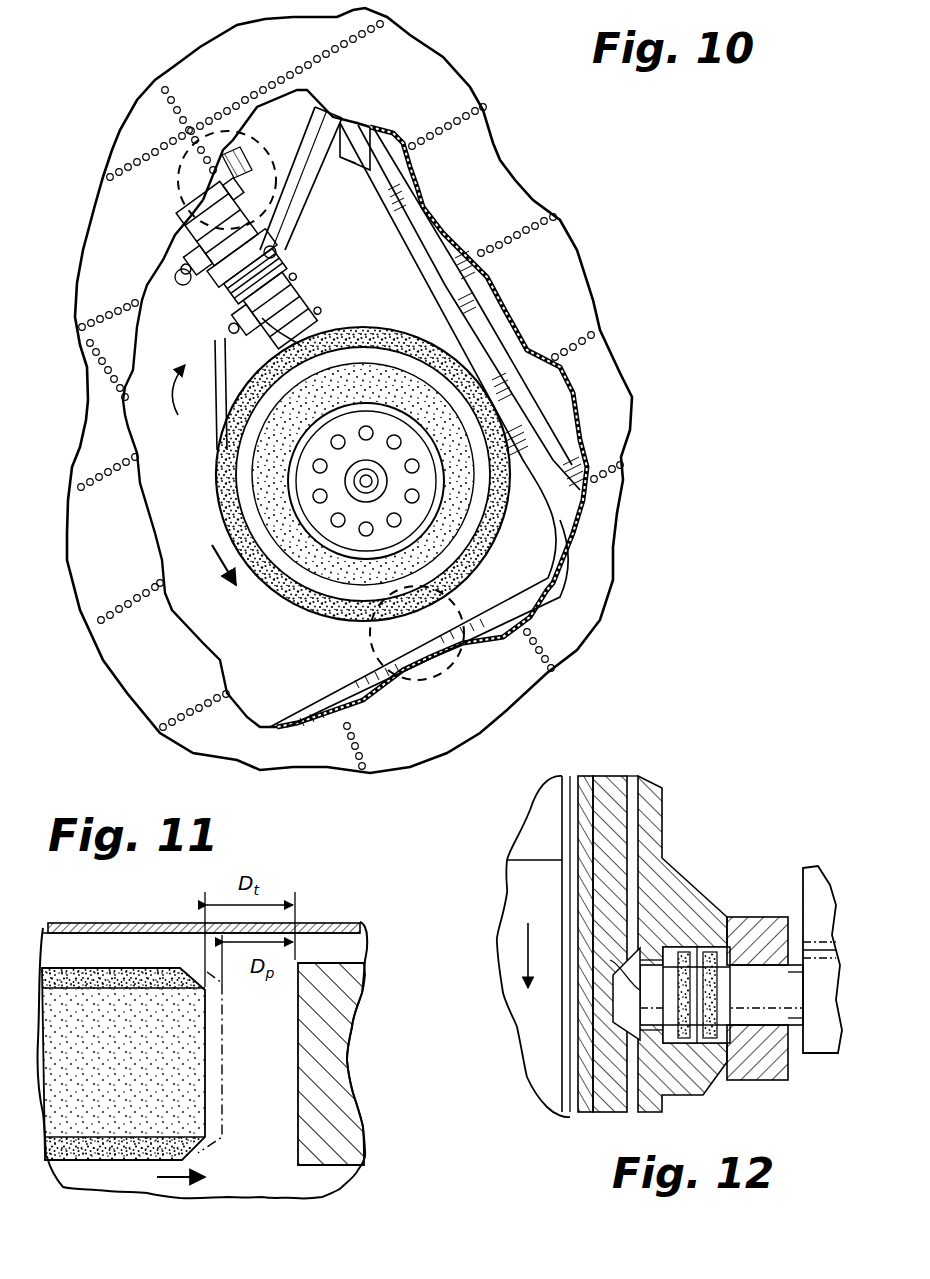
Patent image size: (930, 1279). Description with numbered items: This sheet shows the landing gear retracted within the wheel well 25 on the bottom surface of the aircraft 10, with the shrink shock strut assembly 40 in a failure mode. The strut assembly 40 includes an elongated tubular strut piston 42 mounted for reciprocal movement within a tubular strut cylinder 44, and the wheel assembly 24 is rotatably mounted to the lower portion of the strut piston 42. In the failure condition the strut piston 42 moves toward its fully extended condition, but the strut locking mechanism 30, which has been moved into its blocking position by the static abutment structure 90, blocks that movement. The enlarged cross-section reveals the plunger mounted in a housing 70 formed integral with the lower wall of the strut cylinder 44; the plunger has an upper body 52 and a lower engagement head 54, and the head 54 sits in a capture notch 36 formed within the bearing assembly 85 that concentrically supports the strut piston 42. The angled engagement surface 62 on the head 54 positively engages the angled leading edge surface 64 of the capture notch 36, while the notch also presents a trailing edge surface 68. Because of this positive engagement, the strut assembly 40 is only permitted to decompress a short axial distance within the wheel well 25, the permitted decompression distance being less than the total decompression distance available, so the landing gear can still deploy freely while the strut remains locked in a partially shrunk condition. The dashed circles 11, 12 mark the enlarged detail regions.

In FIG. 10, the aircraft 10 is at (562, 263).
In FIG. 10, the detail region of FIG. 11 is at (366, 636).
In FIG. 10, the detail region of FIG. 12 is at (174, 200).
In FIG. 10, the wheel assembly 24 is at (220, 508).
In FIG. 11, the wheel assembly 24 is at (132, 1010).
In FIG. 10, the wheel well 25 is at (388, 268).
In FIG. 11, the wheel well 25 is at (266, 1086).
In FIG. 10, the strut locking mechanism 30 is at (240, 207).
In FIG. 12, the strut locking mechanism 30 is at (753, 865).
In FIG. 12, the capture notch 36 is at (620, 1038).
In FIG. 10, the shrink shock strut assembly 40 is at (192, 396).
In FIG. 10, the strut piston 42 is at (290, 332).
In FIG. 12, the strut piston 42 is at (585, 776).
In FIG. 10, the strut cylinder 44 is at (189, 316).
In FIG. 12, the strut cylinder 44 is at (655, 795).
In FIG. 12, the upper body 52 is at (778, 1000).
In FIG. 12, the engagement head 54 is at (625, 997).
In FIG. 12, the angled engagement surface 62 is at (560, 937).
In FIG. 12, the leading edge surface 64 is at (640, 950).
In FIG. 12, the trailing edge surface 68 is at (601, 1097).
In FIG. 12, the housing 70 is at (703, 915).
In FIG. 12, the bearing assembly 85 is at (612, 776).
In FIG. 10, the static abutment structure 90 is at (240, 178).
In FIG. 12, the static abutment structure 90 is at (823, 1040).